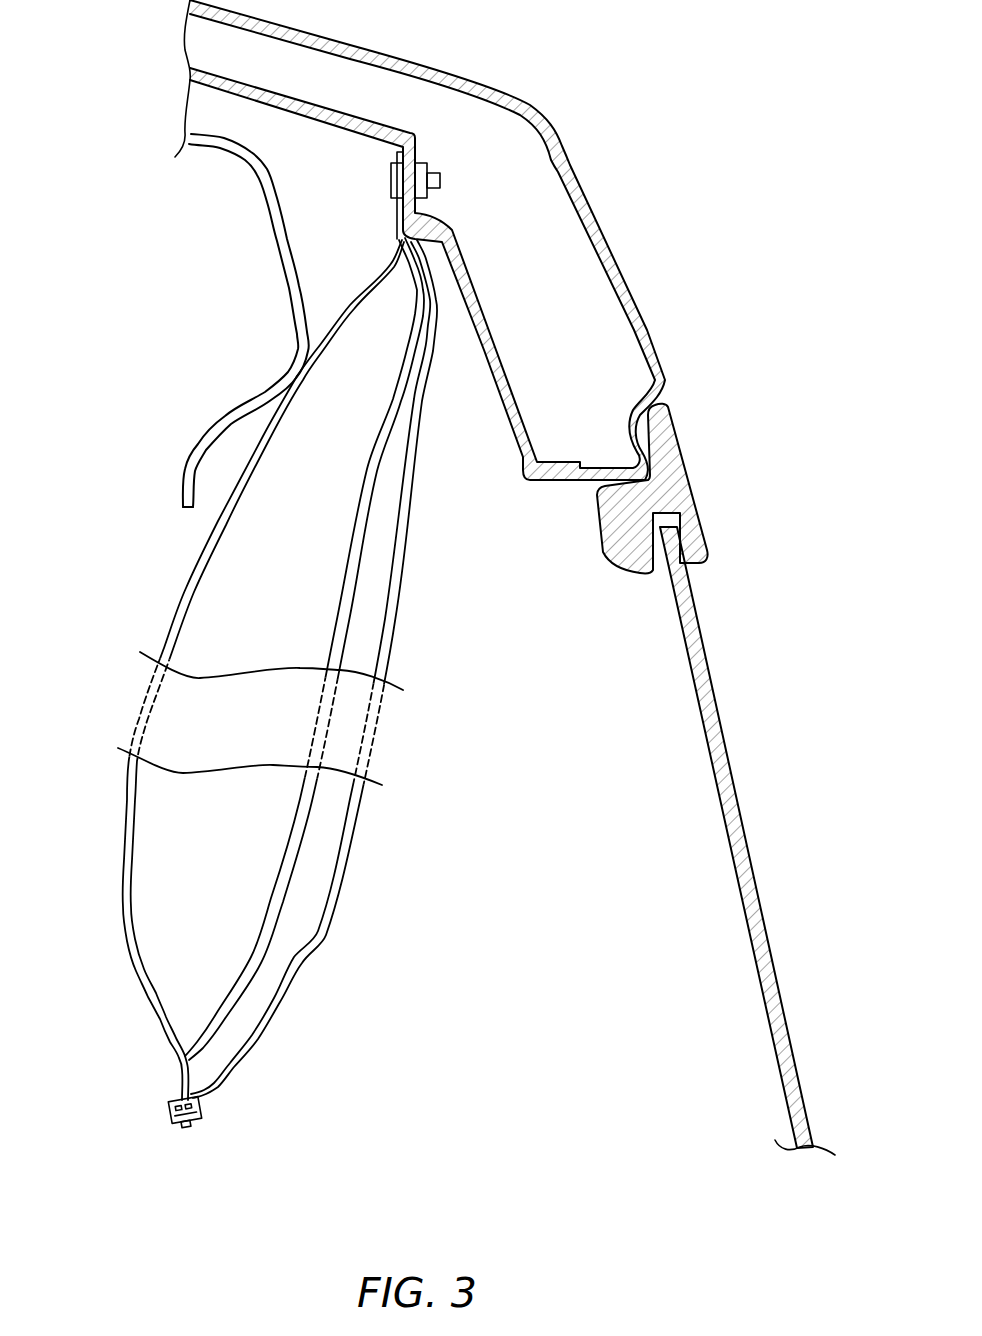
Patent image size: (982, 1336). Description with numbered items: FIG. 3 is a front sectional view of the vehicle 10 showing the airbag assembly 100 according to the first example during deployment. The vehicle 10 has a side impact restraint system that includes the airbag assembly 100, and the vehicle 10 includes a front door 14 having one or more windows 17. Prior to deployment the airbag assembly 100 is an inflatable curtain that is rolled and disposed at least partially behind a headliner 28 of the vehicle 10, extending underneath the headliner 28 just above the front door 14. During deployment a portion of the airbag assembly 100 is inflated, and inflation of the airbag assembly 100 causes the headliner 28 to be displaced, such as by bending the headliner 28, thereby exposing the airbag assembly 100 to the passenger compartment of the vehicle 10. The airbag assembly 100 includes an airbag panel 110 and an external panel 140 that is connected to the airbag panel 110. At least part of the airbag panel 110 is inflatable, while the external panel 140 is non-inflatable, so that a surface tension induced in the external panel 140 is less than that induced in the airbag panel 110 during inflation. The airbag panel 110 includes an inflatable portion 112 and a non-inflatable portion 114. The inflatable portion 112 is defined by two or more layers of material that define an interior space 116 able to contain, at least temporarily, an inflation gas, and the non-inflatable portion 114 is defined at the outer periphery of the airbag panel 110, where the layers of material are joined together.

The vehicle 10 is at (684, 92).
The front door 14 is at (690, 478).
The windows 17 is at (745, 835).
The headliner 28 is at (290, 289).
The airbag assembly 100 is at (247, 669).
The airbag panel 110 is at (127, 832).
The inflatable portion 112 is at (123, 940).
The non-inflatable portion 114 is at (403, 223).
The interior space 116 is at (303, 632).
The external panel 140 is at (320, 933).